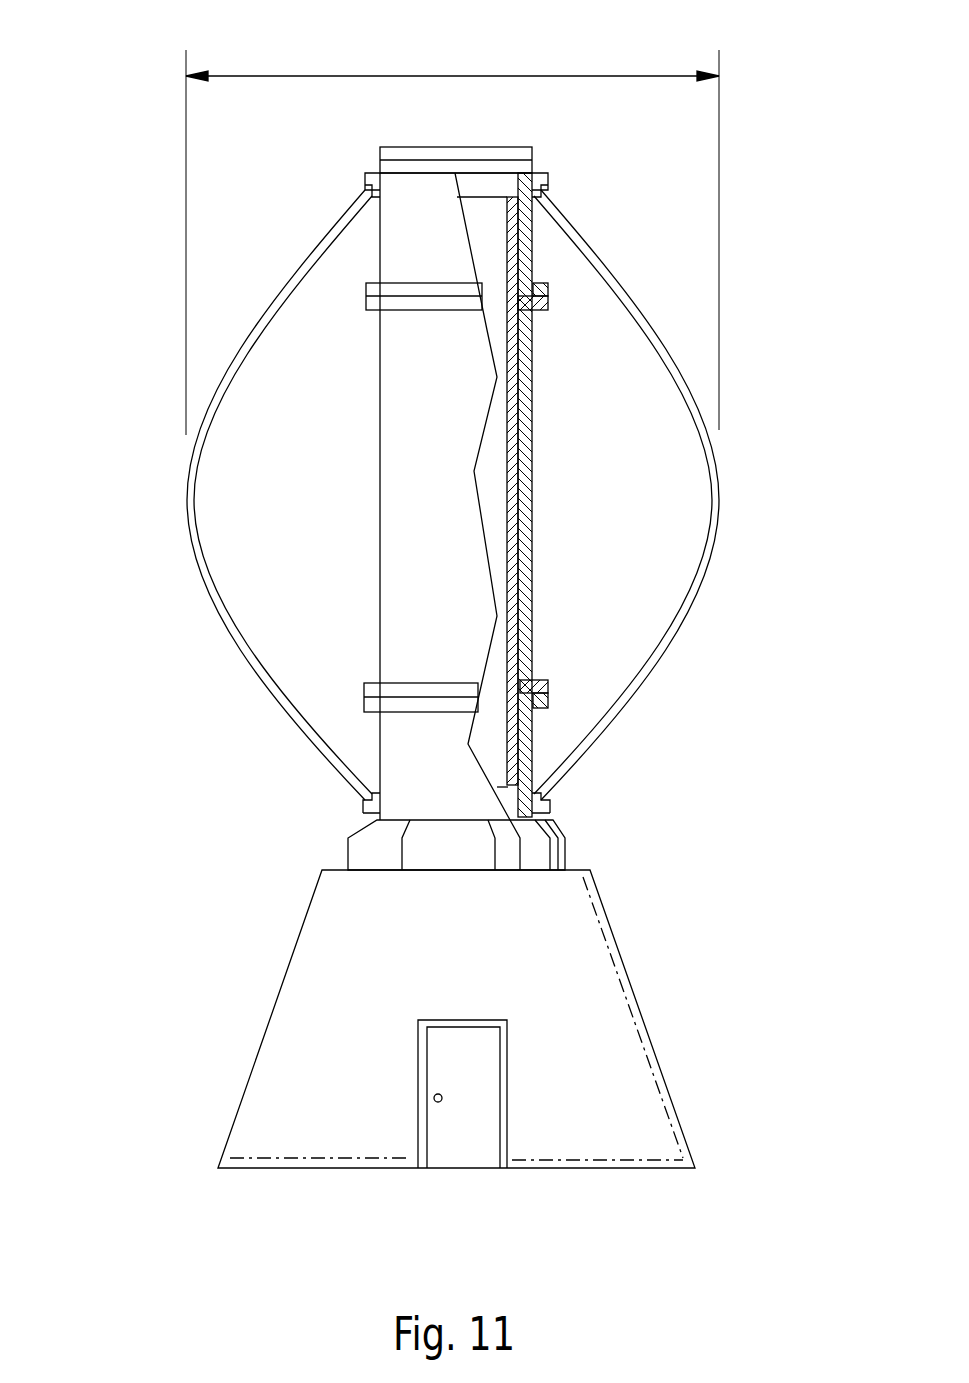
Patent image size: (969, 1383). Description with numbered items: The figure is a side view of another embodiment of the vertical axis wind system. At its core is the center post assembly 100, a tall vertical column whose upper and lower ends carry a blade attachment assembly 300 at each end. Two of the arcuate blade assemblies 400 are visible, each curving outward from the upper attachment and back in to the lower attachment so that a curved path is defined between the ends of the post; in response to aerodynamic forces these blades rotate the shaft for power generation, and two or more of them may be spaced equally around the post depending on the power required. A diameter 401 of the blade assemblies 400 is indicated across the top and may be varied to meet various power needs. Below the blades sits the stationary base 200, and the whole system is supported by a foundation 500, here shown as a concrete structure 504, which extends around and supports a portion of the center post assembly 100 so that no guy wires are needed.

The center post assembly 100 is at (543, 472).
The stationary base 200 is at (333, 853).
The blade attachment assembly 300 is at (567, 187).
The arcuate blade assembly 400 is at (212, 626).
The diameter 401 is at (610, 76).
The foundation 500 is at (667, 983).
The concrete structure 504 is at (670, 1088).